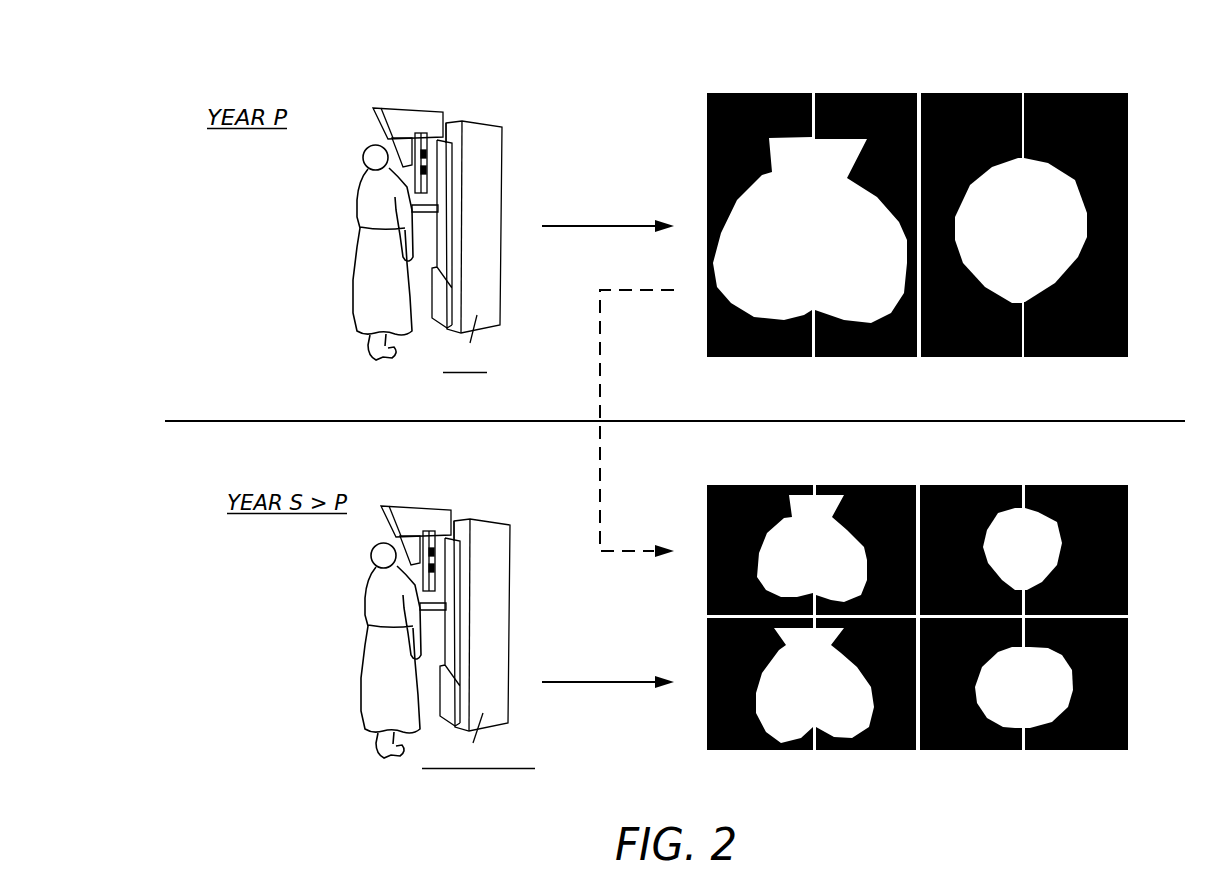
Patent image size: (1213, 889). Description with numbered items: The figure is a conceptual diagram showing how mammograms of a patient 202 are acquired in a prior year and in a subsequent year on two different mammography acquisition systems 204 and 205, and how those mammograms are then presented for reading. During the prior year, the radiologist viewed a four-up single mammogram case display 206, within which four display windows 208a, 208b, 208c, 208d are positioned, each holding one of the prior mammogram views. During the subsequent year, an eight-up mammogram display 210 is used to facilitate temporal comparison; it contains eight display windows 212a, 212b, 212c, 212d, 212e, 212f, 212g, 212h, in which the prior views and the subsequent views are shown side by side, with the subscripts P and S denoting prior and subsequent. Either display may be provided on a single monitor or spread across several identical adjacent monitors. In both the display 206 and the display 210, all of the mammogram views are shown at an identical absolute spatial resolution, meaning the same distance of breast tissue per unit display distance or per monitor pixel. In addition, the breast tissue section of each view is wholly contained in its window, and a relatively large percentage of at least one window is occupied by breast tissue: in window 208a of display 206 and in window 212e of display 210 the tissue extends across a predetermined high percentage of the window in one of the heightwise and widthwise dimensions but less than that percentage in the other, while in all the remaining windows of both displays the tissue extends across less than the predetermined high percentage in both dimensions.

The patient 202 is at (365, 212).
The mammography acquisition system 204 is at (478, 130).
The mammography acquisition system 205 is at (486, 528).
The 4-up single mammogram case display 206 is at (697, 88).
The display window 208a is at (757, 90).
The display window 208b is at (865, 90).
The display window 208c is at (970, 90).
The display window 208d is at (1077, 90).
The 8-up mammogram display 210 is at (699, 485).
The display window 212a is at (797, 482).
The display window 212b is at (893, 482).
The display window 212c is at (1005, 482).
The display window 212d is at (1105, 482).
The display window 212e is at (723, 752).
The display window 212f is at (823, 752).
The display window 212g is at (935, 752).
The display window 212h is at (1033, 752).